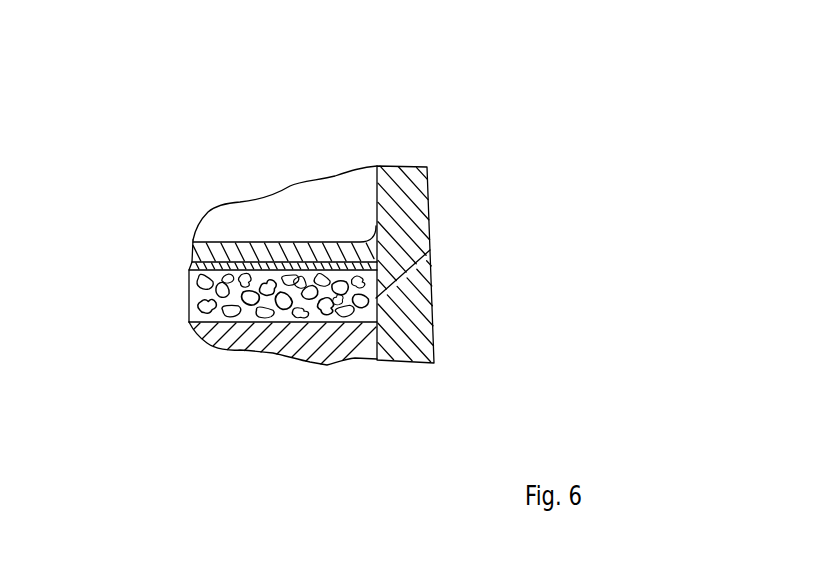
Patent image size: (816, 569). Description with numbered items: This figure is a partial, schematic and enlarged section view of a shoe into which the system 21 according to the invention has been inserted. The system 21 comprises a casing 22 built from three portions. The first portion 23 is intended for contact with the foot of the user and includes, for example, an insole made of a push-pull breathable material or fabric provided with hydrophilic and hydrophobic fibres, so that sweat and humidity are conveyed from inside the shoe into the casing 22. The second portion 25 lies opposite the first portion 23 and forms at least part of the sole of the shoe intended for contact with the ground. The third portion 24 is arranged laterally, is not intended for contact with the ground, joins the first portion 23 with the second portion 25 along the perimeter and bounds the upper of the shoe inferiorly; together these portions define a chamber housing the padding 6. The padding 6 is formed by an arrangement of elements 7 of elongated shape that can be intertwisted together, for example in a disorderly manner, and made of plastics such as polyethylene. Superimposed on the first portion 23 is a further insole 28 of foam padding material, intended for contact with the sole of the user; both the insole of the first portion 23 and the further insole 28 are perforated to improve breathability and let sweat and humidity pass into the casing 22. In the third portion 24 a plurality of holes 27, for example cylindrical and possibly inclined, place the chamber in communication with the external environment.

The system 21 is at (372, 95).
The casing 22 is at (162, 203).
The first portion 23 is at (192, 265).
The third portion 24 is at (413, 198).
The second portion 25 is at (297, 355).
The holes 27 is at (413, 266).
The further insole 28 is at (287, 247).
The padding 6 is at (200, 297).
The elements of elongated shape 7 is at (227, 320).